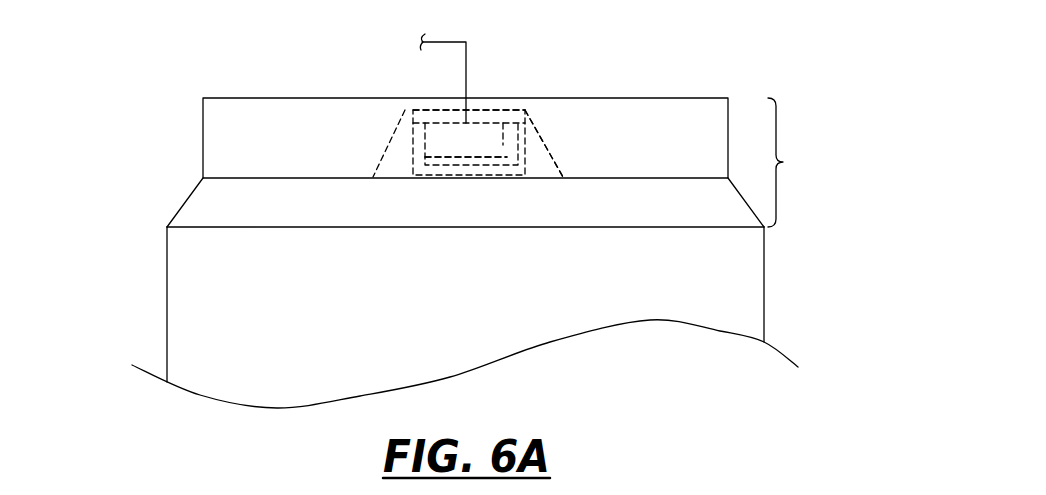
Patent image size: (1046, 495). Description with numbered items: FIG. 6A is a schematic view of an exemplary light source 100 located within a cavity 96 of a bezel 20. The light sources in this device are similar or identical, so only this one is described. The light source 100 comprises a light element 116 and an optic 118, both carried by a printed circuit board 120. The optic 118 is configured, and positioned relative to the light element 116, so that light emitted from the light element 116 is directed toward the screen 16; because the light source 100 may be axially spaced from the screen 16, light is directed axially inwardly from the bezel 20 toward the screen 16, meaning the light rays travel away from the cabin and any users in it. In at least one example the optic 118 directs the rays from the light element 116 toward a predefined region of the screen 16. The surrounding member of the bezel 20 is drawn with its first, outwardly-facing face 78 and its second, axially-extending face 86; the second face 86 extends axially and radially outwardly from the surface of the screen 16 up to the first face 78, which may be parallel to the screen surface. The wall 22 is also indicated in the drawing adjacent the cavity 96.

The screen 16 is at (722, 292).
The bezel 20 is at (793, 162).
The wall 22 is at (538, 133).
The first face 78 is at (218, 118).
The second face 86 is at (205, 203).
The cavity 96 is at (382, 160).
The light source 100 is at (410, 205).
The light element 116 is at (515, 135).
The optic 118 is at (513, 168).
The printed circuit board 120 is at (422, 140).